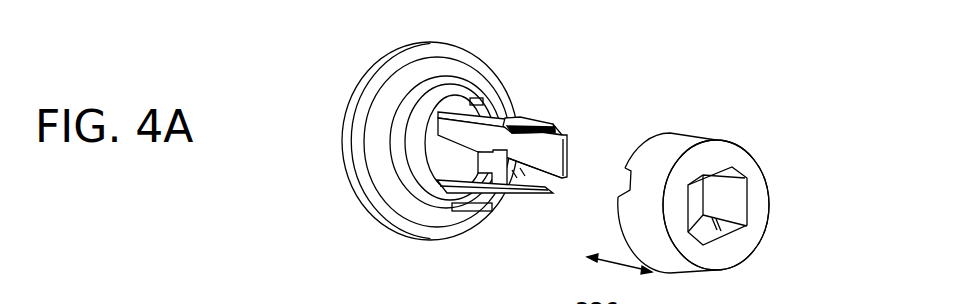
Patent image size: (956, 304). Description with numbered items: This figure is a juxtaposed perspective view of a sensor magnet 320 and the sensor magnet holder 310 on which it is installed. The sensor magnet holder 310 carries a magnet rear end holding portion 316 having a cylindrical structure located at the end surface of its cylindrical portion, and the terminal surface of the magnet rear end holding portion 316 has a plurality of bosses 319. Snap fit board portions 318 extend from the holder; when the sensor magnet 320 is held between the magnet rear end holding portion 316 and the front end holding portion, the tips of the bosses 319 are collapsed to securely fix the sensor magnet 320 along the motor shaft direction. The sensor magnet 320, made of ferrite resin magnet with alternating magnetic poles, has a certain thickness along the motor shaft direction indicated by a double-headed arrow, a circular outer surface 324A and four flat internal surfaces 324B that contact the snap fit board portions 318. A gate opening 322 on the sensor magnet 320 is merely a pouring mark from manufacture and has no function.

The sensor magnet holder 310 is at (330, 125).
The magnet rear end holding portion 316 is at (440, 97).
The snap fit board portions 318 is at (503, 102).
The bosses 319 is at (524, 105).
The sensor magnet 320 is at (680, 142).
The gate opening 322 is at (613, 188).
The circular outer surface 324A is at (712, 139).
The flat internal surfaces 324B is at (737, 202).